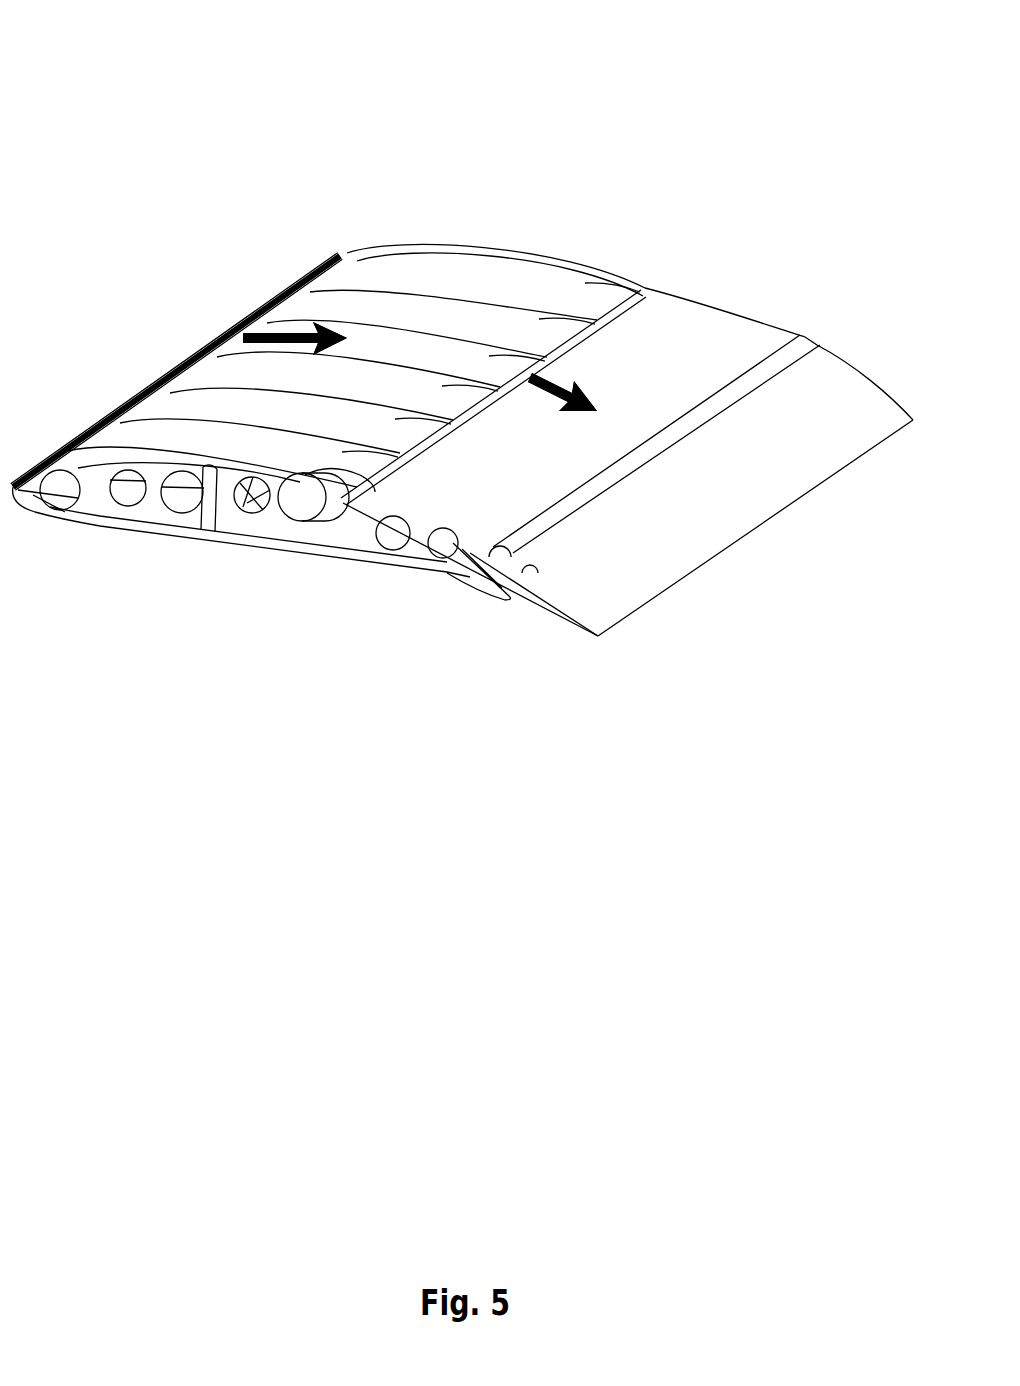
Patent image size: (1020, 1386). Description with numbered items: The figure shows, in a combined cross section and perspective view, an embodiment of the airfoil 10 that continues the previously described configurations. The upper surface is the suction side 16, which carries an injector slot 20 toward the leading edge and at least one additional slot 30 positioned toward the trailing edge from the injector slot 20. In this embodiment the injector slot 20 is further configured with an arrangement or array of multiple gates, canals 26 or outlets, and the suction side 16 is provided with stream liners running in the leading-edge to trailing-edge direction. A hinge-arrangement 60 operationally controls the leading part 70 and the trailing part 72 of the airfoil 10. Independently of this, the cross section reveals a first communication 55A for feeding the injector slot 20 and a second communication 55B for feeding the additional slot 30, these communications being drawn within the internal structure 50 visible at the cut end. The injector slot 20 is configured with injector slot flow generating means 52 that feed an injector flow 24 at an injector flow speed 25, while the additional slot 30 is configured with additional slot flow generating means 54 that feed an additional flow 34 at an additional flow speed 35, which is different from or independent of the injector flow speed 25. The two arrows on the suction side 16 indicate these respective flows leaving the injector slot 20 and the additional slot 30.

The airfoil 10 is at (563, 193).
The suction side 16 is at (435, 268).
The injector slot 20 is at (337, 273).
The injector flow 24 is at (285, 343).
The injector flow speed 25 is at (295, 374).
The canals 26 is at (134, 394).
The additional slot 30 is at (622, 320).
The additional flow 34 is at (553, 384).
The additional flow speed 35 is at (551, 430).
The internal support structure 50 is at (313, 623).
The injector slot flow generating means 52 is at (142, 644).
The additional slot flow generating means 54 is at (165, 646).
The first communication 55A is at (53, 490).
The second communication 55B is at (297, 518).
The hinge-arrangement 60 is at (472, 603).
The leading part 70 is at (250, 225).
The trailing part 72 is at (368, 603).